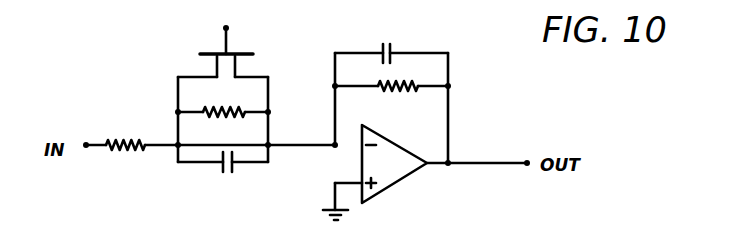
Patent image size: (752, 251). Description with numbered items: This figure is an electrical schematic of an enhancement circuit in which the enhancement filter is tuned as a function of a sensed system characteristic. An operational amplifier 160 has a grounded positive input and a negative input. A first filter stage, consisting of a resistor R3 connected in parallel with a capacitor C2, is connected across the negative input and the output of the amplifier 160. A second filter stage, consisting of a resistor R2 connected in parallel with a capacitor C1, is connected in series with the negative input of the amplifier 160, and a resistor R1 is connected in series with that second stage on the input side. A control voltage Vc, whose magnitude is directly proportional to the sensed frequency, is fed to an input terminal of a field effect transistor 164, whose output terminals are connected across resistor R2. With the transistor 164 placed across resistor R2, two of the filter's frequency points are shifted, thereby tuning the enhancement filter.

The field effect transistor 164 is at (235, 50).
The operational amplifier 160 is at (397, 172).
The resistor R1 is at (132, 133).
The resistor R2 is at (223, 101).
The resistor R3 is at (394, 93).
The capacitor C1 is at (228, 176).
The capacitor C2 is at (386, 44).